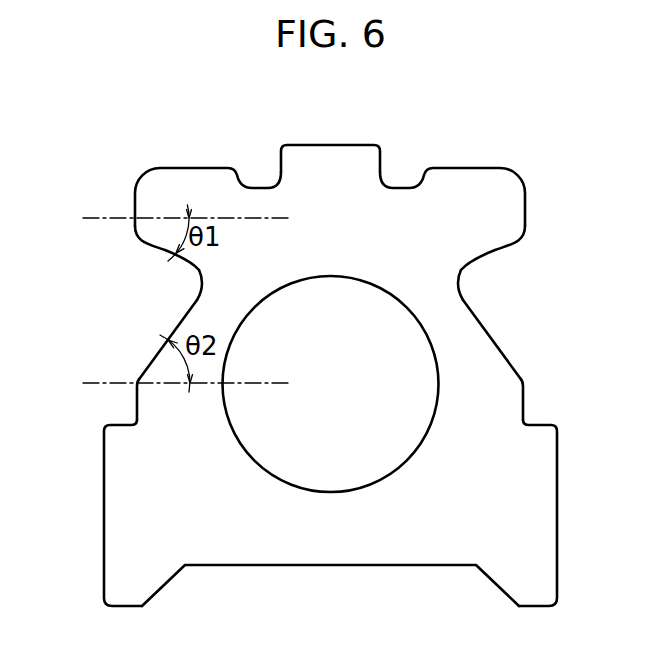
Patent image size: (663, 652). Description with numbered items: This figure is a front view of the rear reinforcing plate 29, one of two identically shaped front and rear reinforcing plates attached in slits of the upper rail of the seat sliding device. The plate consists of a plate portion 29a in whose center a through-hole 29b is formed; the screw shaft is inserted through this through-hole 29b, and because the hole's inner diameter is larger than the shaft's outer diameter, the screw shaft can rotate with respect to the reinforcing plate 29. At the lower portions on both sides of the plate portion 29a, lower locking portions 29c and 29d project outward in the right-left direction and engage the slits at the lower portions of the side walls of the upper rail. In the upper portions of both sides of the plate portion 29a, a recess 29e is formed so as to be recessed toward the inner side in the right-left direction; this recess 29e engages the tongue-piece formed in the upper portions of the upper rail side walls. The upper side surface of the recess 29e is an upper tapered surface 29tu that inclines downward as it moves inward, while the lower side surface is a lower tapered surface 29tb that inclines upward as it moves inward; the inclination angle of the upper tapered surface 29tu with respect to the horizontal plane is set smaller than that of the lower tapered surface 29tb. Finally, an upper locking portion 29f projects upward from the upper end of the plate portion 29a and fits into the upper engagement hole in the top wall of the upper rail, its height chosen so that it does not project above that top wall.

The reinforcing plate 29 is at (473, 165).
The plate portion 29a is at (331, 567).
The through-hole 29b is at (338, 282).
The lower locking portion 29c is at (547, 510).
The lower locking portion 29d is at (113, 510).
The recess 29e is at (183, 288).
The upper locking portion 29f is at (334, 148).
The upper tapered surface 29tu is at (158, 245).
The lower tapered surface 29tb is at (155, 356).